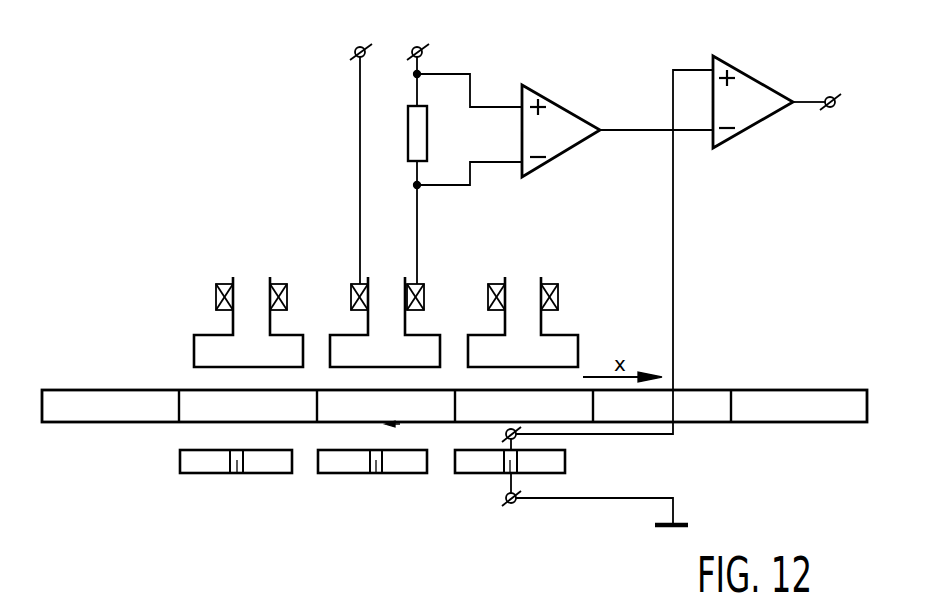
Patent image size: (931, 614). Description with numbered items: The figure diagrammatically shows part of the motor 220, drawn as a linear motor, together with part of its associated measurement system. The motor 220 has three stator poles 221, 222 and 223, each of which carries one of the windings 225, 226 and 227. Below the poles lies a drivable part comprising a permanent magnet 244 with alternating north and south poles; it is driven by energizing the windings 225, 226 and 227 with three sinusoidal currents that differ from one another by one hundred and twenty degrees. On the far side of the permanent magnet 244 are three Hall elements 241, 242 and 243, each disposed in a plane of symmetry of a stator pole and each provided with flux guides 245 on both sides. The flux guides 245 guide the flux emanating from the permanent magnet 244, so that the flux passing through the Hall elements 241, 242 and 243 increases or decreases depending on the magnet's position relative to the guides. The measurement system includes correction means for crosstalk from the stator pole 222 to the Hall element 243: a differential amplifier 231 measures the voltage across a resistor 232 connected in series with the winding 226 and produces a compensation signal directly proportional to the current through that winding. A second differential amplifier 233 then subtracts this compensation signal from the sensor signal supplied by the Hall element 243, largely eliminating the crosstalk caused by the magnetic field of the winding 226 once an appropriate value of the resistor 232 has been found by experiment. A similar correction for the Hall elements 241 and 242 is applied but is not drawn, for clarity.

The motor 220 is at (200, 274).
The stator pole 221 is at (194, 350).
The stator pole 222 is at (330, 345).
The stator pole 223 is at (578, 348).
The winding 225 is at (276, 284).
The winding 226 is at (425, 293).
The winding 227 is at (557, 292).
The differential amplifier 231 is at (568, 105).
The resistor 232 is at (428, 130).
The second differential amplifier 233 is at (767, 80).
The Hall element 241 is at (238, 475).
The Hall element 242 is at (375, 475).
The Hall element 243 is at (504, 465).
The permanent magnet 244 is at (700, 389).
The flux guides 245 is at (205, 475).